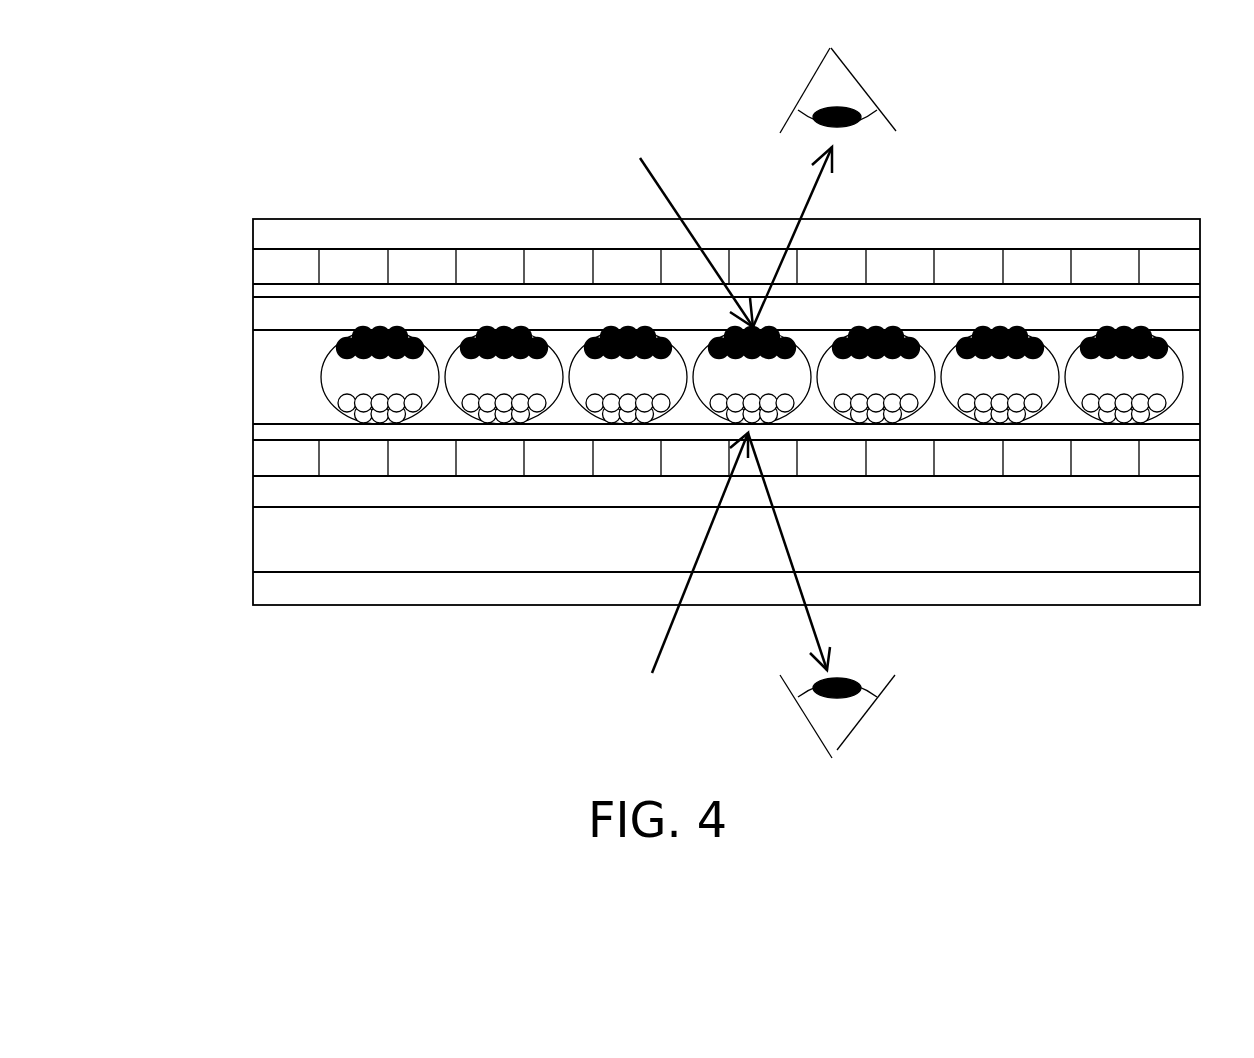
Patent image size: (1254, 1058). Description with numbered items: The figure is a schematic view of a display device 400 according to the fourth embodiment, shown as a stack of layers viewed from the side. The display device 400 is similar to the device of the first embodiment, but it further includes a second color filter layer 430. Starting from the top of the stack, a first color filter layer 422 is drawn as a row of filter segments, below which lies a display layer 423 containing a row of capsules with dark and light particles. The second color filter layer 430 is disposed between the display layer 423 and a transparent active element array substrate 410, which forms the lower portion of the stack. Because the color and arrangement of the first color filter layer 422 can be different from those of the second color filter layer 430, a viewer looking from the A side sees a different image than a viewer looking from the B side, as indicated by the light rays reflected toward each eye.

The display device 400 is at (1246, 702).
The transparent active element array substrate 410 is at (238, 475).
The first color filter layer 422 is at (261, 268).
The display layer 423 is at (238, 297).
The second color filter layer 430 is at (261, 459).
The A side A is at (838, 81).
The B side B is at (837, 723).